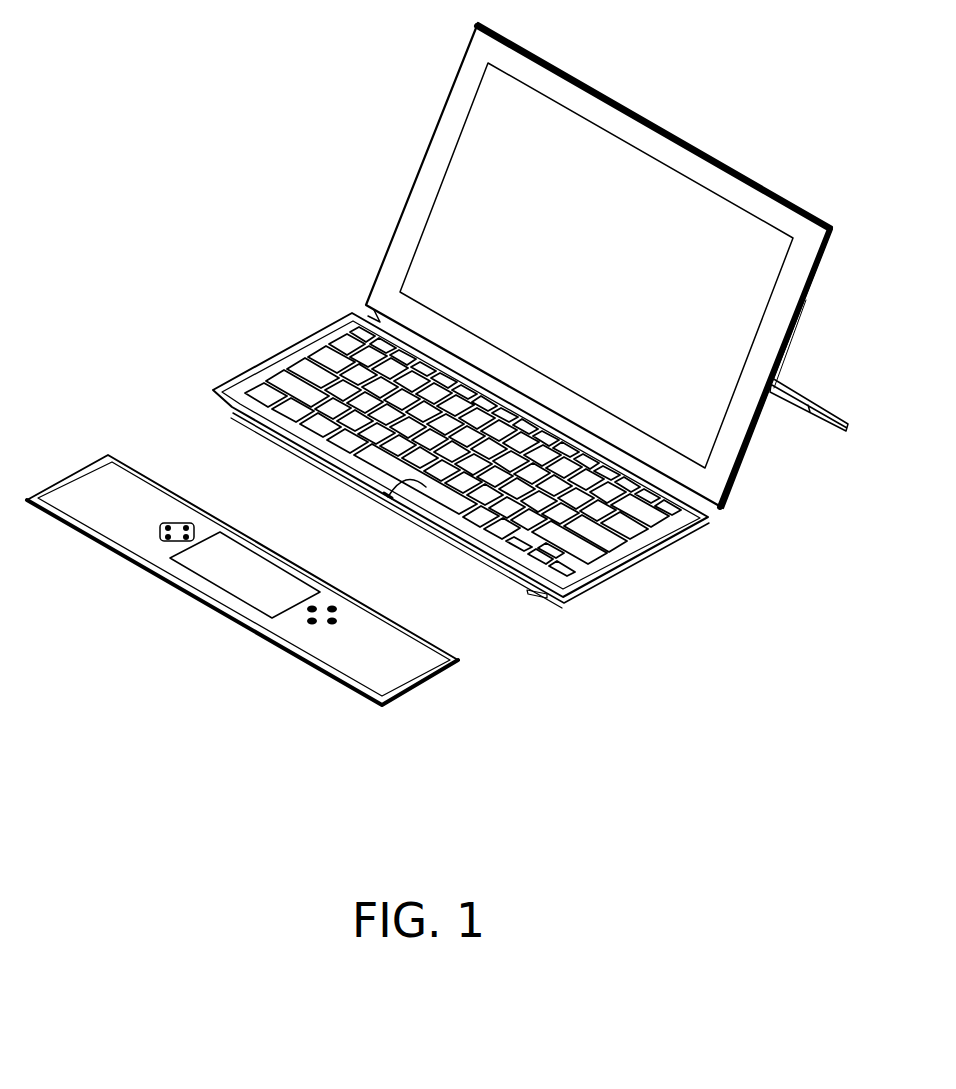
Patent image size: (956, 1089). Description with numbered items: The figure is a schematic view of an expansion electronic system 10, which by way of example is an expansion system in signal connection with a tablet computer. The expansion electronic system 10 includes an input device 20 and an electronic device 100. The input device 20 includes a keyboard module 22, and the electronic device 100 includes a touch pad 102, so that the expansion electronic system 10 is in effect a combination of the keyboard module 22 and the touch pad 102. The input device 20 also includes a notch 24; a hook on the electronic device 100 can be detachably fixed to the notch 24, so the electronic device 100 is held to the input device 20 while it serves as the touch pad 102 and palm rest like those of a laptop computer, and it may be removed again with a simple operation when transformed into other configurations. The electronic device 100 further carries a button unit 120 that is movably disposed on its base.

The expansion electronic system 10 is at (788, 760).
The input device 20 is at (461, 427).
The keyboard module 22 is at (320, 345).
The notch 24 is at (424, 484).
The electronic device 100 is at (240, 534).
The touch pad 102 is at (250, 567).
The button unit 120 is at (167, 521).